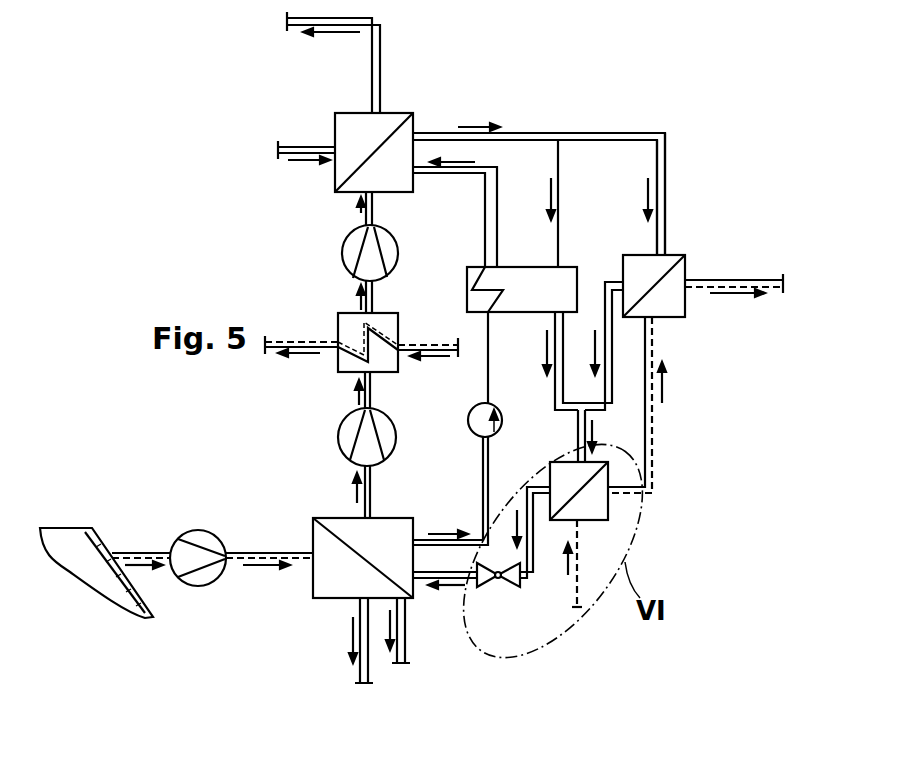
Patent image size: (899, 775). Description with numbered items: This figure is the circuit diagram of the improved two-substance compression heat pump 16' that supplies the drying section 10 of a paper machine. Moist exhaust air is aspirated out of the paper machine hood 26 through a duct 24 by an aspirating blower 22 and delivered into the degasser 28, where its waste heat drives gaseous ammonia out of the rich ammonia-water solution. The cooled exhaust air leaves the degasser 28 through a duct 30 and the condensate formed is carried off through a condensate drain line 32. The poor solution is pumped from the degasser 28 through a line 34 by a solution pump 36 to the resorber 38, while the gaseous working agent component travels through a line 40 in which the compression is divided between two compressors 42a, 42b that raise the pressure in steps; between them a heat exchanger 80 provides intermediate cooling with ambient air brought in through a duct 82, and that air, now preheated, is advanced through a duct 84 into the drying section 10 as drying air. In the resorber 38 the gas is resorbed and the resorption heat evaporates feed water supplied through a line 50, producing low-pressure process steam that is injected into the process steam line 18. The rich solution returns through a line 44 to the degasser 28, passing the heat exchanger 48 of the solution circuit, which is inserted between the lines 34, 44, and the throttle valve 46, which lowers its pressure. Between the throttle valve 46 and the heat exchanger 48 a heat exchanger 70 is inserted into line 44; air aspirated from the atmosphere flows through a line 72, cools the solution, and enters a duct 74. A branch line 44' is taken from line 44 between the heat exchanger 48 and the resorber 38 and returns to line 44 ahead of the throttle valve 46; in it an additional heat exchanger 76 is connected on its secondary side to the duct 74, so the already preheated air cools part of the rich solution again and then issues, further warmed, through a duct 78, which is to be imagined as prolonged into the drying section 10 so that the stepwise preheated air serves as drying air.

The drying section 10 is at (62, 527).
The paper machine hood 26 is at (86, 527).
The aspirating blower 22 is at (193, 530).
The duct 24 is at (270, 551).
The degasser 28 is at (322, 600).
The duct 30 is at (358, 643).
The condensate drain line 32 is at (405, 632).
The line 40 is at (372, 488).
The compressor 42a is at (340, 425).
The compressor 42b is at (343, 247).
The heat exchanger 80 is at (398, 360).
The duct 82 is at (418, 340).
The duct 84 is at (300, 338).
The resorber 38 is at (413, 113).
The process steam line 18 is at (366, 28).
The line 50 is at (303, 145).
The line 44 is at (539, 344).
The branch line 44' is at (664, 244).
The heat exchanger 48 is at (571, 267).
The line 34 is at (483, 459).
The solution pump 36 is at (503, 418).
The additional heat exchanger 76 is at (676, 257).
The duct 78 is at (736, 280).
The duct 74 is at (655, 422).
The heat exchanger 70 is at (567, 520).
The line 72 is at (581, 548).
The throttle valve 46 is at (498, 588).
The two-substance compression heat pump 16' is at (213, 264).